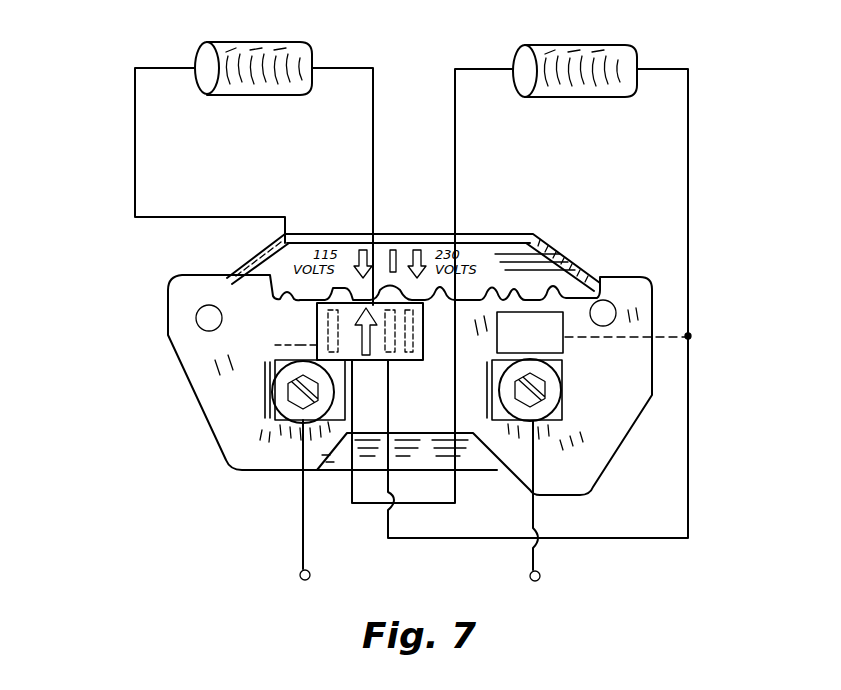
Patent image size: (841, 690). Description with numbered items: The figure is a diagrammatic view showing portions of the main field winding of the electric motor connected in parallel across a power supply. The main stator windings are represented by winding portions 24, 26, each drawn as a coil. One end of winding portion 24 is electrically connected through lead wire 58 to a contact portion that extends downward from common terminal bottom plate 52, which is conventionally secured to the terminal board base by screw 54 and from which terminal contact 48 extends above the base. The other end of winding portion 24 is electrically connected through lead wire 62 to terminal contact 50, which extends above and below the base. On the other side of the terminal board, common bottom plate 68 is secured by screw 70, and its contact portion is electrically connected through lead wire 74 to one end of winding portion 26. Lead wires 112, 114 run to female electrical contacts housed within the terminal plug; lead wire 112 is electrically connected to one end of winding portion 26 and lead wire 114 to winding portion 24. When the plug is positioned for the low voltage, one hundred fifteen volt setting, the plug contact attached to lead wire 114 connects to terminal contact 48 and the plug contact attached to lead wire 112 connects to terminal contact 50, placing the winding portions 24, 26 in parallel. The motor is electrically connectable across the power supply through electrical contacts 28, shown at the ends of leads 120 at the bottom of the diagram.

The winding portion 24 is at (287, 52).
The winding portion 26 is at (610, 52).
The electrical contacts 28 is at (299, 580).
The terminal contact 48 is at (300, 353).
The terminal contact 50 is at (440, 360).
The common terminal bottom plate 52 is at (275, 345).
The screw 54 is at (300, 423).
The lead wire 58 is at (135, 129).
The lead wire 62 is at (373, 144).
The common bottom plate 68 is at (548, 344).
The screw 70 is at (555, 395).
The lead wire 74 is at (690, 334).
The lead wire 112 is at (660, 515).
The lead wire 114 is at (458, 151).
The output leads 120 is at (303, 531).